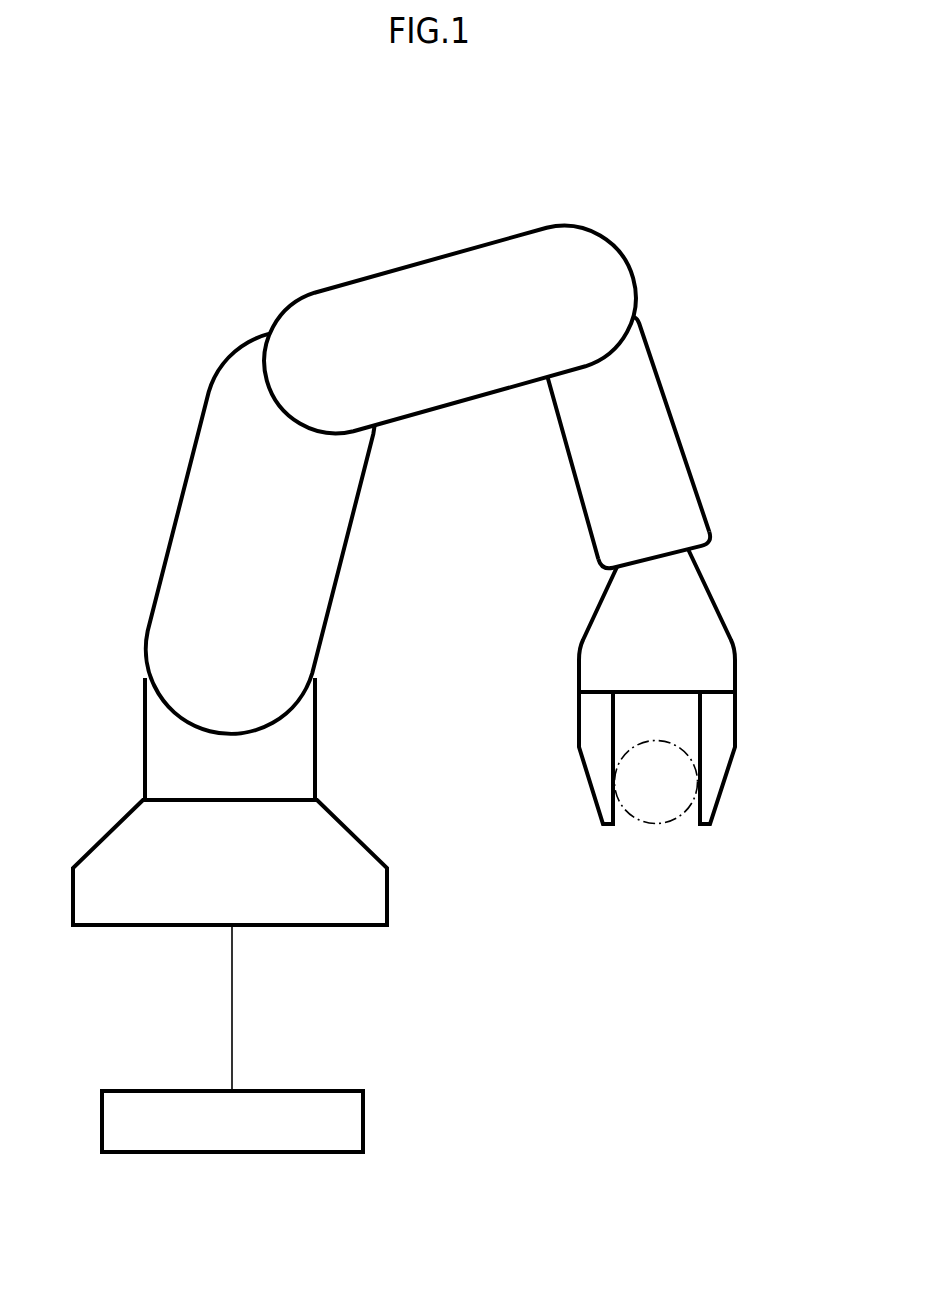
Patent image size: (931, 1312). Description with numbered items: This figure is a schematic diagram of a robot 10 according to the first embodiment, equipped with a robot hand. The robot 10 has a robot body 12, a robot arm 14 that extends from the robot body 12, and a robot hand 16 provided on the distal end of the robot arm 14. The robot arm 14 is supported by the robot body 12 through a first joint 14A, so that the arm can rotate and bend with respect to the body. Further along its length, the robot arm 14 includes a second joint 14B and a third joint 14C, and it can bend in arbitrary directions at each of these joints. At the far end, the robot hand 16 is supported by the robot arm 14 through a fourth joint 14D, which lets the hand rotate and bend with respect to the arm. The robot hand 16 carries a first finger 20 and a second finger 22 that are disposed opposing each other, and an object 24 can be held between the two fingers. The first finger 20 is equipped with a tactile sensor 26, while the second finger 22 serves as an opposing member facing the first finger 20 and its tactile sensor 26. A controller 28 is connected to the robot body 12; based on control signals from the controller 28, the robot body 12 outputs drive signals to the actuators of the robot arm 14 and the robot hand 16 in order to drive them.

The robot 10 is at (220, 190).
The robot body 12 is at (133, 912).
The robot arm 14 is at (205, 475).
The first joint 14A is at (148, 675).
The second joint 14B is at (258, 340).
The third joint 14C is at (647, 312).
The fourth joint 14D is at (713, 553).
The robot hand 16 is at (722, 612).
The first finger 20 is at (585, 793).
The second finger 22 is at (722, 727).
The object 24 is at (667, 828).
The tactile sensor 26 is at (618, 847).
The controller 28 is at (365, 1113).